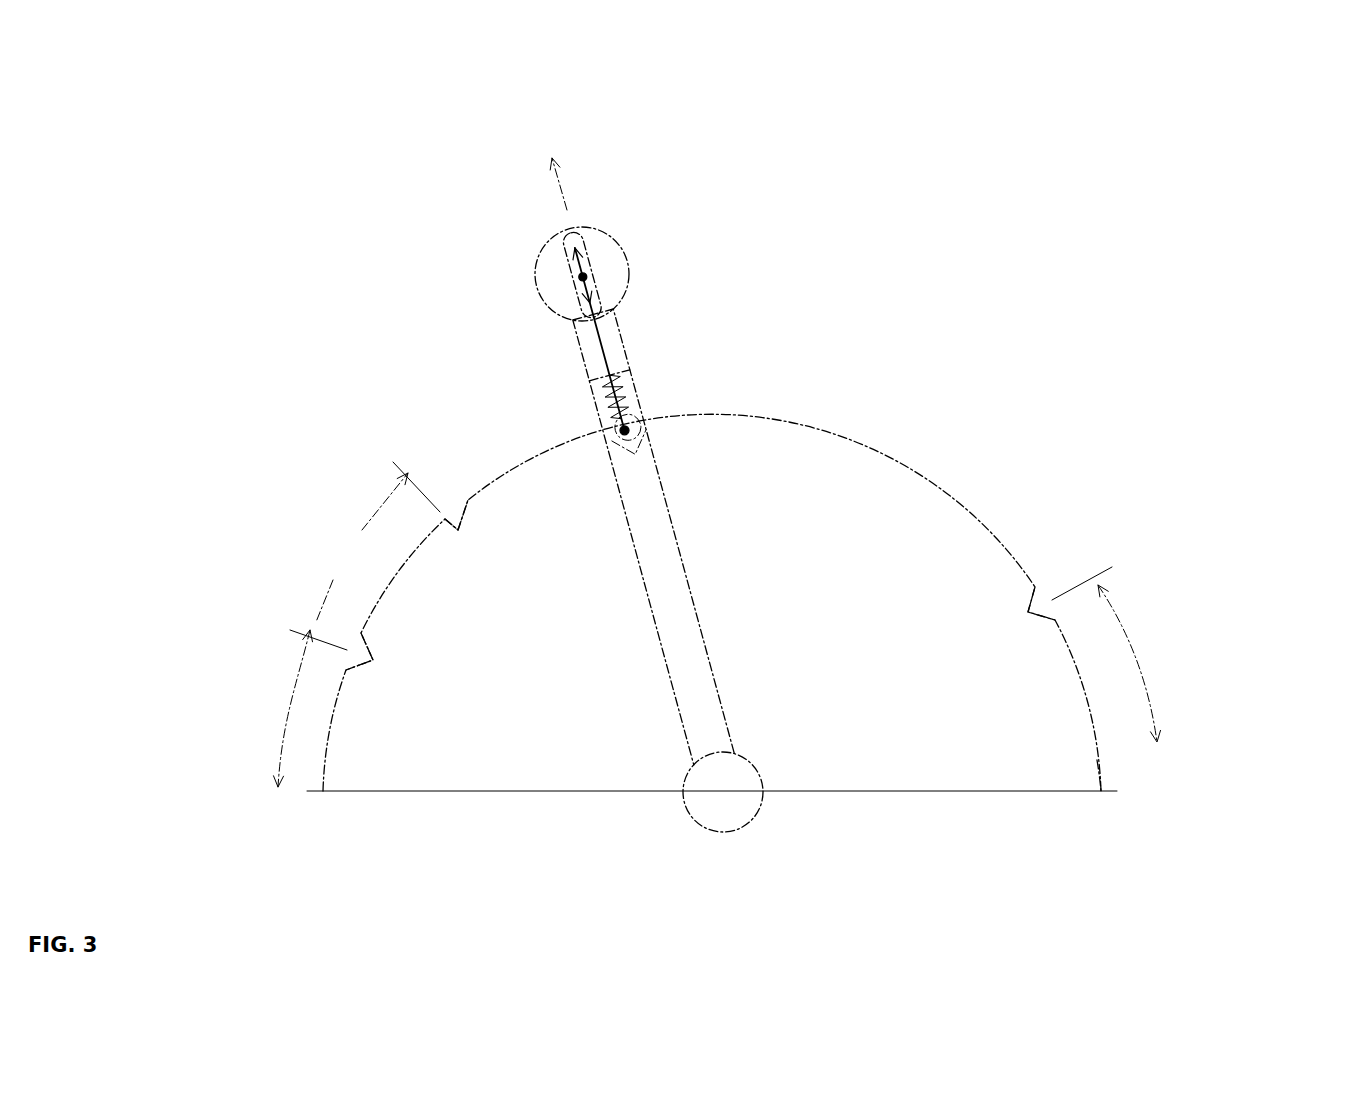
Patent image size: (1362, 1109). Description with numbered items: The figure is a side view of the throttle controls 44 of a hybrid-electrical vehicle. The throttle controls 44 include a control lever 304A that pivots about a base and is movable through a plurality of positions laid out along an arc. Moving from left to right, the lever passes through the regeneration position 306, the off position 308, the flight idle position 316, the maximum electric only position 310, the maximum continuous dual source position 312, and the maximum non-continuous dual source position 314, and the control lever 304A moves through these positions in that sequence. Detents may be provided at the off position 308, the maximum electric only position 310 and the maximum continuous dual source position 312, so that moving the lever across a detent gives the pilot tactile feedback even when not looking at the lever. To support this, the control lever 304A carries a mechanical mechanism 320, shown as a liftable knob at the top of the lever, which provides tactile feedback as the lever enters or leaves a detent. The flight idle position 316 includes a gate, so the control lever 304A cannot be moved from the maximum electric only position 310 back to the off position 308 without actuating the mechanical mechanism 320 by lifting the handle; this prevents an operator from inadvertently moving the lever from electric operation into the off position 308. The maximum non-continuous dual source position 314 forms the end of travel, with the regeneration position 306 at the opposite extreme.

The throttle controls 44 is at (1182, 90).
The mechanical mechanism 320 is at (685, 250).
The control lever 304A is at (627, 340).
The maximum electric only position 310 is at (632, 448).
The flight idle position 316 is at (445, 512).
The off position 308 is at (291, 628).
The regeneration position 306 is at (241, 737).
The maximum continuous dual source position 312 is at (1028, 612).
The maximum non-continuous dual source position 314 is at (1097, 790).